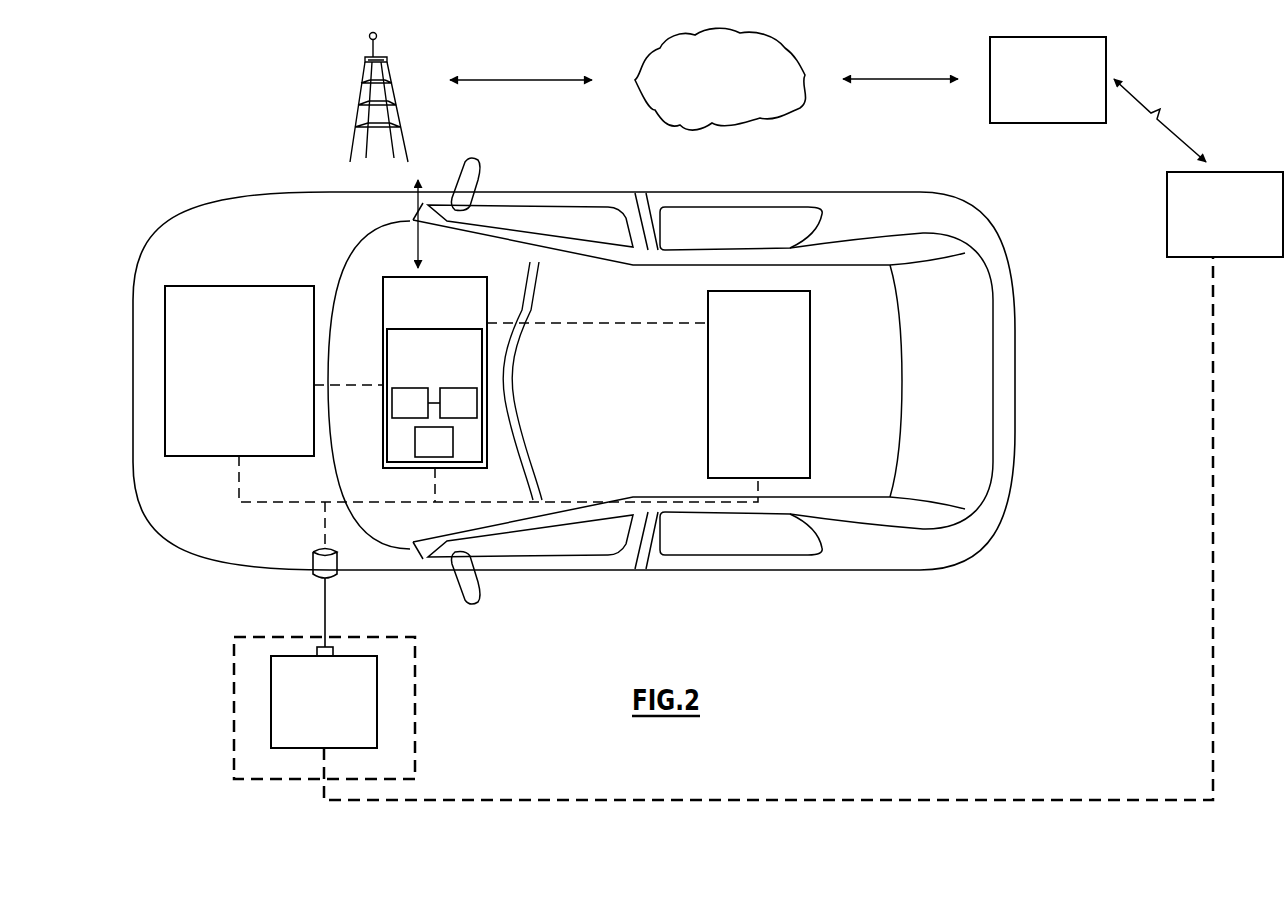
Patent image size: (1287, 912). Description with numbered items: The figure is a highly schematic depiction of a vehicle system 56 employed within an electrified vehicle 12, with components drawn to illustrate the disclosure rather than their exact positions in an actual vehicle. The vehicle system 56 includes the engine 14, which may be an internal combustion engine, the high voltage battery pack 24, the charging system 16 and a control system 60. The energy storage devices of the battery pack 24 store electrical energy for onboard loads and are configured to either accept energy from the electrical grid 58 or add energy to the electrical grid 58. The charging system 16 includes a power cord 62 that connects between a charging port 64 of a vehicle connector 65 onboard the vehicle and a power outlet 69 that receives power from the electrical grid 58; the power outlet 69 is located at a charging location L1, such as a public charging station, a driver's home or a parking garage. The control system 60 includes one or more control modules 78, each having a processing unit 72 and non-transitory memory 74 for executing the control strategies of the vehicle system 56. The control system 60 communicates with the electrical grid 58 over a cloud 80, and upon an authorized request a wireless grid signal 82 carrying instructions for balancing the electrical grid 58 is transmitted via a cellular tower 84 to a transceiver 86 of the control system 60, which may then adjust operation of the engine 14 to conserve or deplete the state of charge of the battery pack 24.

The electrified vehicle 12 is at (962, 190).
The engine 14 is at (165, 365).
The charging system 16 is at (305, 582).
The high voltage battery pack 24 is at (708, 407).
The vehicle system 56 is at (226, 478).
The electrical grid 58 is at (1240, 257).
The control system 60 is at (511, 341).
The power cord 62 is at (326, 612).
The charging port 64 is at (311, 549).
The vehicle connector 65 is at (343, 546).
The power outlet 69 is at (324, 697).
The processing unit 72 is at (410, 403).
The non-transitory memory 74 is at (458, 403).
The control module 78 is at (409, 394).
The cloud 80 is at (779, 117).
The wireless grid signal 82 is at (1067, 123).
The cellular tower 84 is at (392, 66).
The transceiver 86 is at (434, 442).
The charging location L1 is at (416, 684).